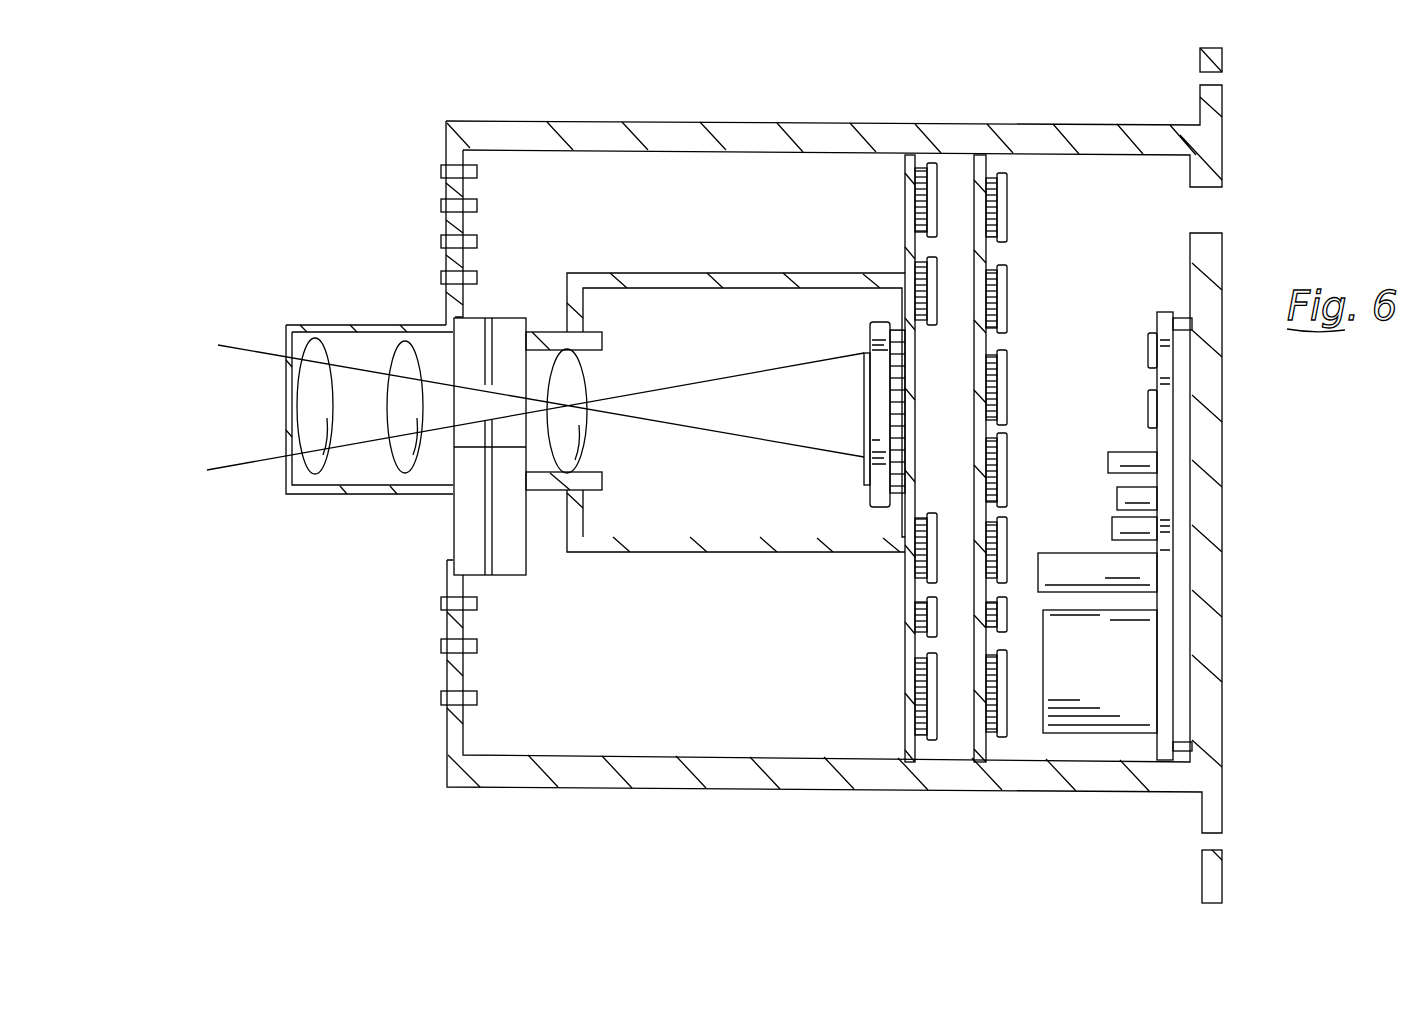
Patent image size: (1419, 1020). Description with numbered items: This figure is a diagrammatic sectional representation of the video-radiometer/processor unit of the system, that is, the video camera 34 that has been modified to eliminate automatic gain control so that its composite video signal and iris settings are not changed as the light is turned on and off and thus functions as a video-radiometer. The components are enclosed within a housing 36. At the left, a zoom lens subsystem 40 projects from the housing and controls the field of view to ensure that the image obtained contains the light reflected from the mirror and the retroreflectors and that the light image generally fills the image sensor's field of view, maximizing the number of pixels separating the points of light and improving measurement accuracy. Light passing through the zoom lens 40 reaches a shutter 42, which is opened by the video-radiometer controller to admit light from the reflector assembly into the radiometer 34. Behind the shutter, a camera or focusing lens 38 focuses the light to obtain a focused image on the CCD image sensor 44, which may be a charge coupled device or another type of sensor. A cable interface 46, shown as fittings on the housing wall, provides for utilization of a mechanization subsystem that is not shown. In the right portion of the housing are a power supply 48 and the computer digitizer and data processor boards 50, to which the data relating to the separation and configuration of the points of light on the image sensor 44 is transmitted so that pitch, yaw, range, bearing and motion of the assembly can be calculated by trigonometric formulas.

The video camera 34 is at (575, 117).
The housing 36 is at (963, 127).
The camera or focusing lens 38 is at (588, 438).
The zoom lens subsystem 40 is at (334, 502).
The shutter 42 is at (512, 306).
The CCD image sensor 44 is at (862, 331).
The cable interface 46 is at (422, 686).
The power supply 48 is at (1126, 426).
The computer digitizer and data processor boards 50 is at (939, 243).